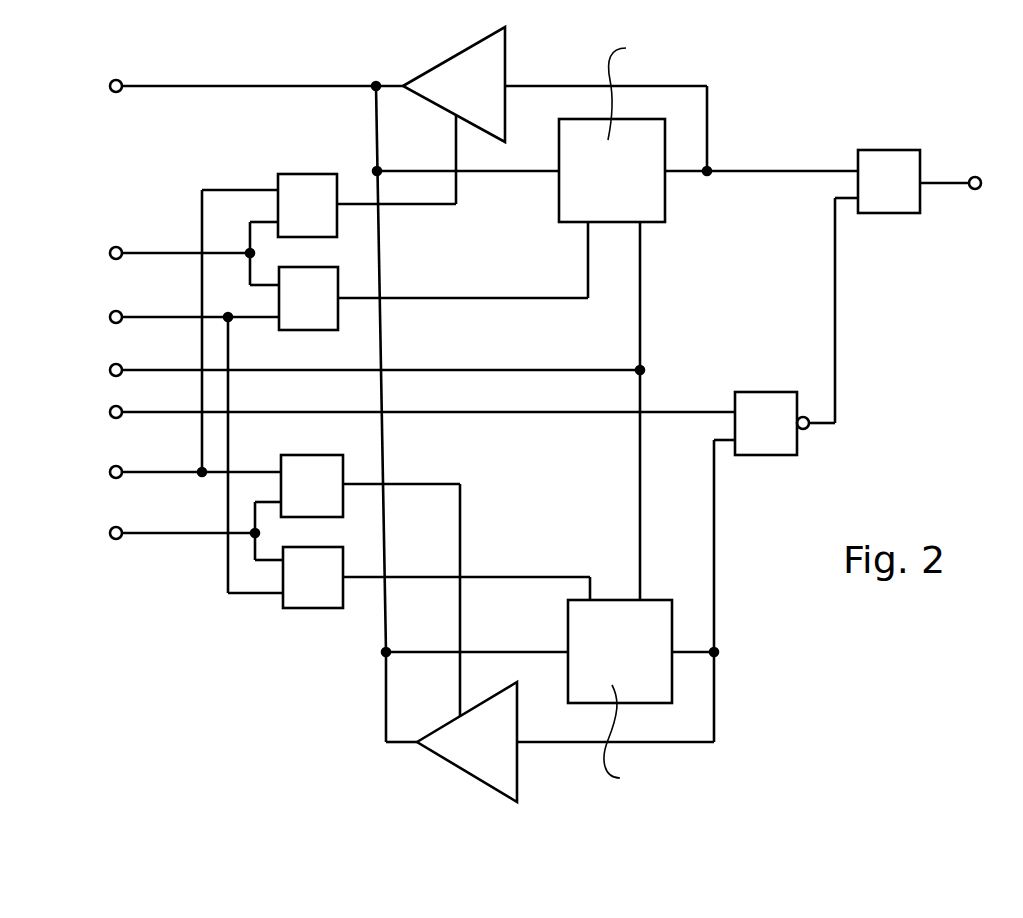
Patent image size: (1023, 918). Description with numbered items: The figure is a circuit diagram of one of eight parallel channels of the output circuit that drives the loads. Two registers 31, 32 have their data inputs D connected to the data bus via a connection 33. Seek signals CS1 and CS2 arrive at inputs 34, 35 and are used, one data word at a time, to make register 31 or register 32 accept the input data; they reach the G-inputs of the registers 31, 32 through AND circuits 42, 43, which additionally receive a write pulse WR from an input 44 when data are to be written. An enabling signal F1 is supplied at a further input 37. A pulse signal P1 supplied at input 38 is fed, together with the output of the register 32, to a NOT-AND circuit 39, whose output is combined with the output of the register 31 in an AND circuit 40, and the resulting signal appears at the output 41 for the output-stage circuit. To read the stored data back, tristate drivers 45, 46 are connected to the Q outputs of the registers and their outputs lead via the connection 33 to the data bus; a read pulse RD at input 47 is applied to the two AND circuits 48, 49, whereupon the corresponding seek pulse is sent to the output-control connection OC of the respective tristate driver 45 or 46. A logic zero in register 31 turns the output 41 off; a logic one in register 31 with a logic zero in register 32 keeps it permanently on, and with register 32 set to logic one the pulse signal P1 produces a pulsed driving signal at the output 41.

The connection 33 is at (103, 60).
The input 34 is at (103, 227).
The input 44 is at (103, 291).
The input 37 is at (103, 344).
The input 38 is at (103, 386).
The input 47 is at (103, 446).
The input 35 is at (103, 507).
The AND circuit 49 is at (313, 180).
The AND circuit 42 is at (314, 273).
The AND circuit 48 is at (317, 461).
The AND circuit 43 is at (317, 553).
The tristate driver 46 is at (438, 70).
The tristate driver 45 is at (452, 752).
The register 31 is at (652, 205).
The register 32 is at (652, 697).
The NOT-AND circuit 39 is at (786, 370).
The AND circuit 40 is at (905, 130).
The output 41 is at (985, 156).